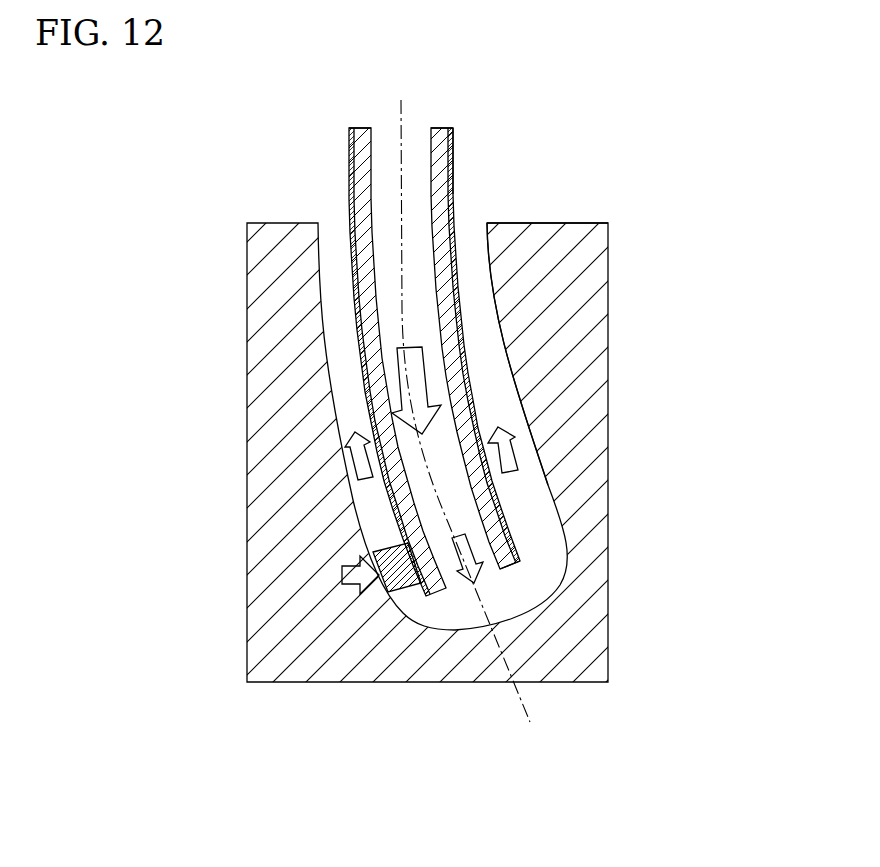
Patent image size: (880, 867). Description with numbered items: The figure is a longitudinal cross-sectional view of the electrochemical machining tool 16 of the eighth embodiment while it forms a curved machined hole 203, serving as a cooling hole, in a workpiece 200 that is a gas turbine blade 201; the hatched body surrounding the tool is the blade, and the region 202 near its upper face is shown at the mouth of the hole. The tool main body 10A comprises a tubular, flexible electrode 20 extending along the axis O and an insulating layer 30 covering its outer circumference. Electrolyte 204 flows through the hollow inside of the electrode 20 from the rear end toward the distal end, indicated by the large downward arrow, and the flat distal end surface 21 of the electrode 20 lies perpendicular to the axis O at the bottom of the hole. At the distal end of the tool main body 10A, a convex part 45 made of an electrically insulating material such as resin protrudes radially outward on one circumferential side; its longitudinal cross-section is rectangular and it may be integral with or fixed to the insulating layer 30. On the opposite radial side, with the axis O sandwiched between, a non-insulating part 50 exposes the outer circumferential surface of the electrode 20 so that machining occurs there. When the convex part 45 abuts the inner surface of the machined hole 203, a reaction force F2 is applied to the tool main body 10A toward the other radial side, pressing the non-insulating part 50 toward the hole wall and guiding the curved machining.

The electrochemical machining tool 16 is at (488, 132).
The tool main body 10A is at (466, 181).
The electrode 20 is at (362, 150).
The distal end surface 21 is at (505, 570).
The insulating layer 30 is at (352, 190).
The convex part 45 is at (402, 592).
The non-insulating part 50 is at (516, 548).
The workpiece 200 is at (578, 381).
The turbine blade 201 is at (440, 450).
The holder top surface 202 is at (550, 222).
The machined hole 203 is at (488, 292).
The electrolyte 204 is at (457, 490).
The axis O is at (402, 293).
The reaction force F2 is at (352, 582).